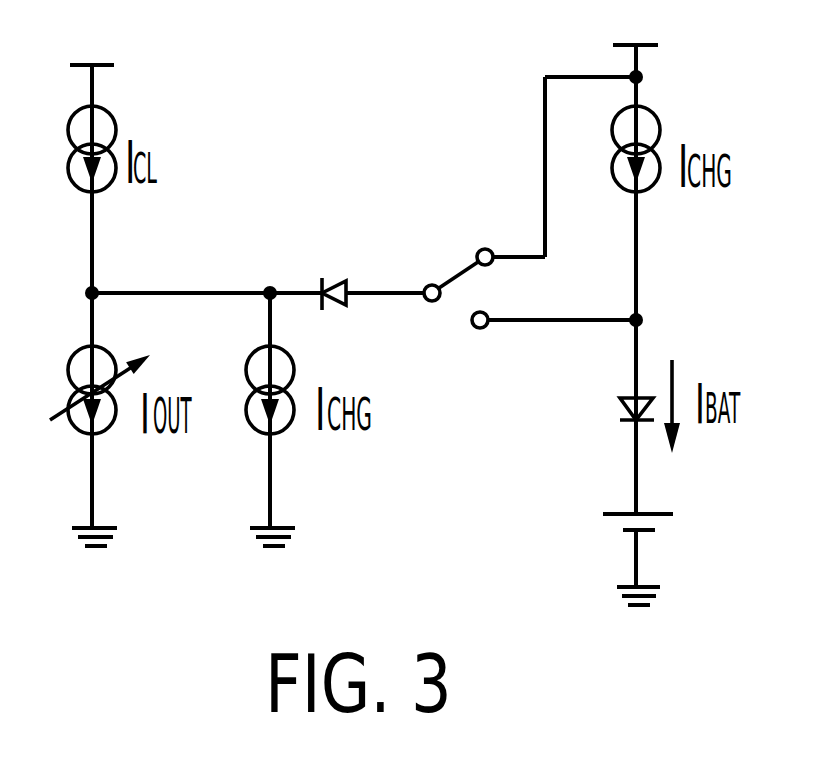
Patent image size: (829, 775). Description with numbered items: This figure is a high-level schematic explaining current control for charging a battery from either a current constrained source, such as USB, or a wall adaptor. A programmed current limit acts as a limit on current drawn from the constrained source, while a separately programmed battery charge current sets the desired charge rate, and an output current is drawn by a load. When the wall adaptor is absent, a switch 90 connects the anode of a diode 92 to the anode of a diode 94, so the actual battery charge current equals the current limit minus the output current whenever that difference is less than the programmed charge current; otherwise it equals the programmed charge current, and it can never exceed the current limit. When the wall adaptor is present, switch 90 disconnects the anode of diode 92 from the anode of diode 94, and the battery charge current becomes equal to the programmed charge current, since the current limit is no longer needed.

The switch 90 is at (453, 279).
The diode 92 is at (326, 281).
The diode 94 is at (630, 415).